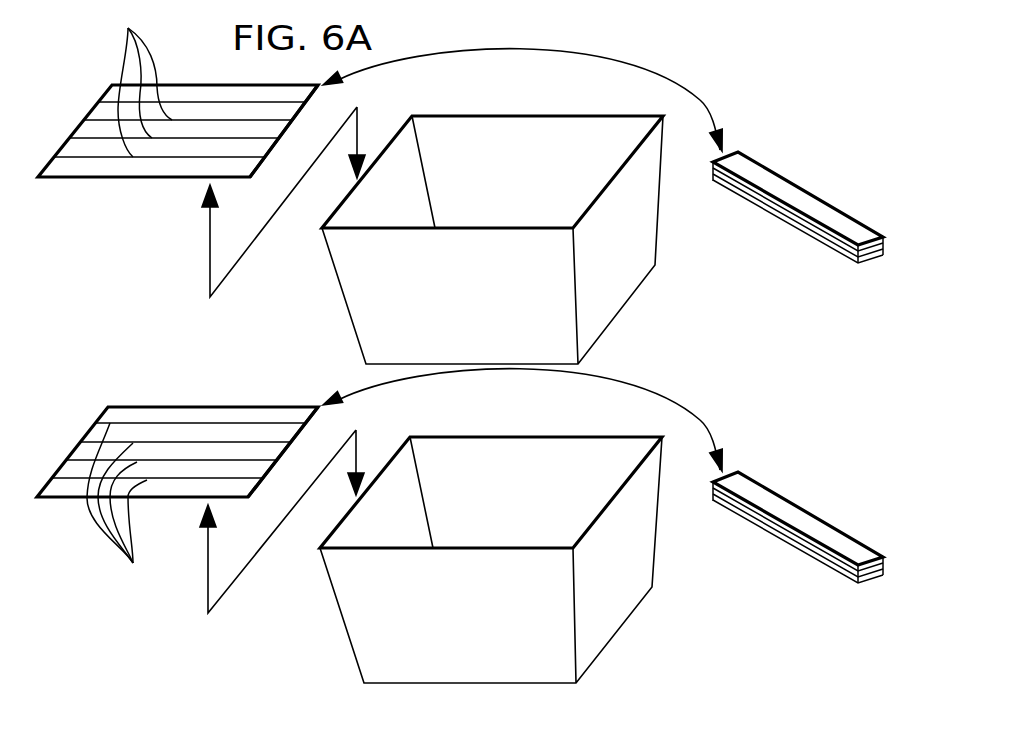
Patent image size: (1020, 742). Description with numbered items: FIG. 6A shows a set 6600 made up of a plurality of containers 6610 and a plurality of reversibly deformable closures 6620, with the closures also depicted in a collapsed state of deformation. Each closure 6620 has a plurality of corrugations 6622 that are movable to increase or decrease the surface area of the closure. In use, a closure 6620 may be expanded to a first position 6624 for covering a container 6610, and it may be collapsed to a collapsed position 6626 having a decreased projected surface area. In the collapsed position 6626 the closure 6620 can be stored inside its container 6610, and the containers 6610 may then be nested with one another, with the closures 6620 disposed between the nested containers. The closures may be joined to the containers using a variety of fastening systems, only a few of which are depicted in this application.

The set 6600 is at (270, 681).
The container 6610 is at (620, 313).
The reversibly deformable closure 6620 is at (83, 432).
The corrugations 6622 is at (870, 610).
The first position 6624 is at (300, 112).
The collapsed position 6626 is at (806, 238).